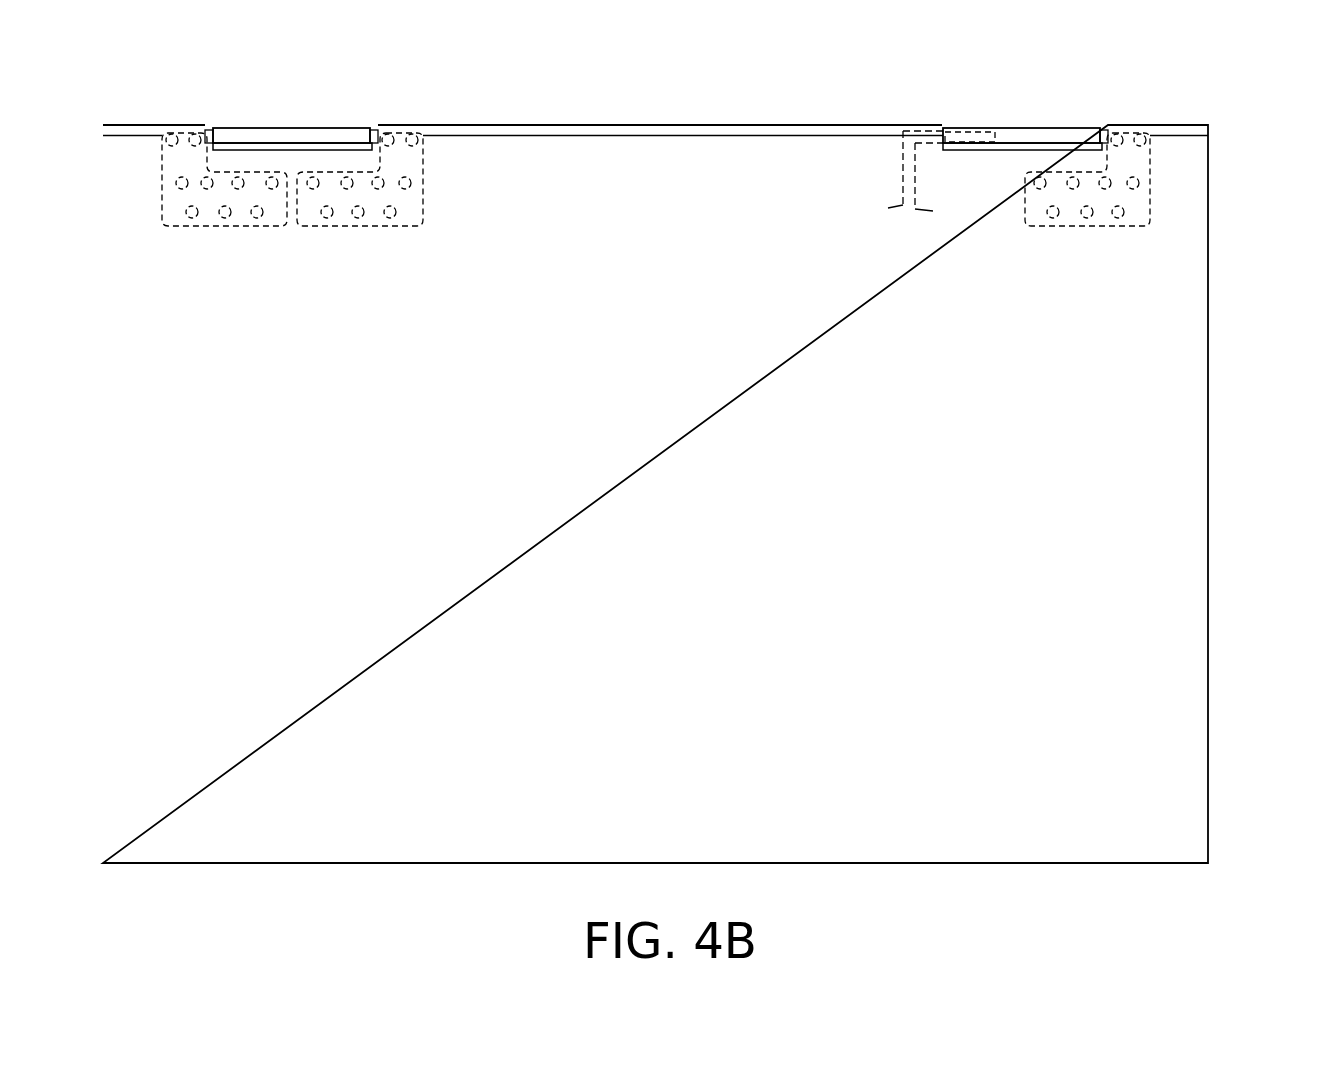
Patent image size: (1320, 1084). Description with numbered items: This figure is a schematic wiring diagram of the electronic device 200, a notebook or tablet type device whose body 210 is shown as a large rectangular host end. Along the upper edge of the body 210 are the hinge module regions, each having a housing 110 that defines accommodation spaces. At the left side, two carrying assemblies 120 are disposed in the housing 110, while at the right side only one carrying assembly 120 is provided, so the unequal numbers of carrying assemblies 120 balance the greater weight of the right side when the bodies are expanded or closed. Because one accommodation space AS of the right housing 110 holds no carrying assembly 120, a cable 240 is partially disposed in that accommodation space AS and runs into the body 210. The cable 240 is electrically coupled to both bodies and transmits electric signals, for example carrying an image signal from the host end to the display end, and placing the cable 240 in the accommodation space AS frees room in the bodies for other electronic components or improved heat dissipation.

The electronic device 200 is at (702, 477).
The body 210 is at (1153, 502).
The housing 110 is at (1063, 137).
The carrying assembly 120 is at (1138, 160).
The cable 240 is at (902, 157).
The accommodation space AS is at (1007, 133).